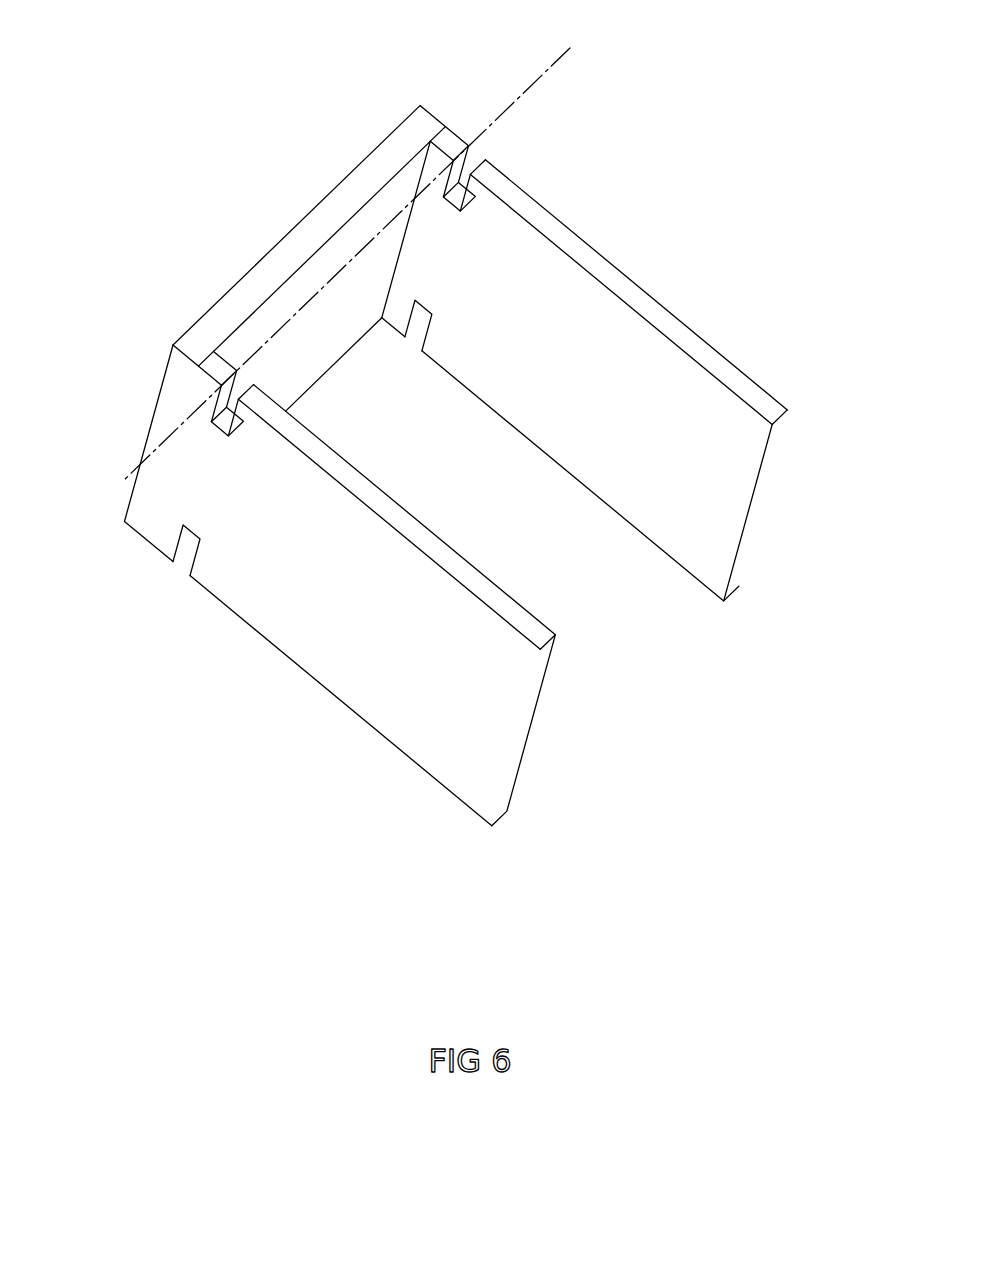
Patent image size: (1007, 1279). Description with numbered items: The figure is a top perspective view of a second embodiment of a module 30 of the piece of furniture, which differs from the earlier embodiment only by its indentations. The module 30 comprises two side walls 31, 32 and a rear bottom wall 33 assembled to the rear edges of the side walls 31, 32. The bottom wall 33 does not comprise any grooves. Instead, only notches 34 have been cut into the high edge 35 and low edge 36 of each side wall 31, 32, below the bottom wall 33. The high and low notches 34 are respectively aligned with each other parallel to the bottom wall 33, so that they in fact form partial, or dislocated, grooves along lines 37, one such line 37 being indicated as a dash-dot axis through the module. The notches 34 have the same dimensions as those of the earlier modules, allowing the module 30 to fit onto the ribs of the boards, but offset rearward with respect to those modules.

The module 30 is at (578, 605).
The side wall 31 is at (585, 353).
The side wall 32 is at (364, 585).
The rear bottom wall 33 is at (320, 330).
The notches 34 is at (463, 197).
The high edge 35 is at (582, 278).
The low edge 36 is at (273, 632).
The lines 37 is at (128, 472).